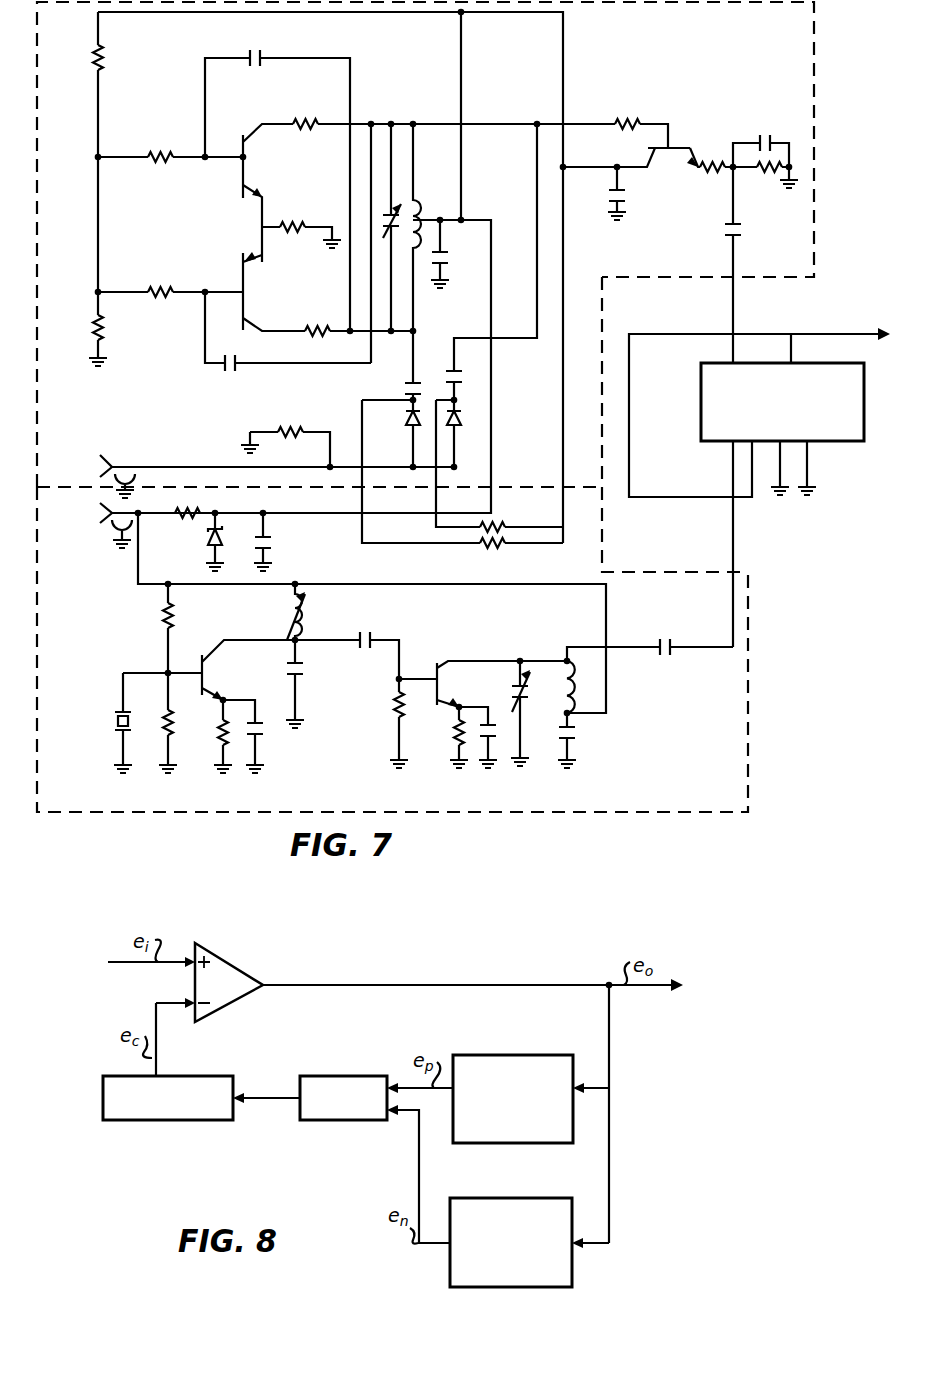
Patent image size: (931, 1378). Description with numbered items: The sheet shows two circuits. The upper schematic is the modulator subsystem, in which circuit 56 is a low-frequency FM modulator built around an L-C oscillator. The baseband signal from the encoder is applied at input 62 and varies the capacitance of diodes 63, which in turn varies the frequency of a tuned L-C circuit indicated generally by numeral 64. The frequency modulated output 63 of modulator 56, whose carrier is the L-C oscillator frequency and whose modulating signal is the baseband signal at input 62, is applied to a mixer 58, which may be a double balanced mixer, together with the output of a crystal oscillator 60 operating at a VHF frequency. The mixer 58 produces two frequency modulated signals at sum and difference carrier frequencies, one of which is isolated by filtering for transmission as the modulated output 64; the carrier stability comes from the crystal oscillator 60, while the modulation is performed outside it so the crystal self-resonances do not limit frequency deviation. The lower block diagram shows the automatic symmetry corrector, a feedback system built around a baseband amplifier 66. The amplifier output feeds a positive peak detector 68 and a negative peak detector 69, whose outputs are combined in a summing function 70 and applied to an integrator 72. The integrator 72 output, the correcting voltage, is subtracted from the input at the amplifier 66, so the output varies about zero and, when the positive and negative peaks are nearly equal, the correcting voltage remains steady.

In FIG. 7, the modulator circuit 56 is at (815, 137).
In FIG. 7, the mixer 58 is at (847, 441).
In FIG. 7, the crystal oscillator 60 is at (752, 748).
In FIG. 7, the input 62 is at (98, 462).
In FIG. 7, the diodes / modulator output 63 is at (733, 258).
In FIG. 7, the tuned L-C circuit 64 is at (437, 160).
In FIG. 8, the baseband amplifier 66 is at (240, 962).
In FIG. 8, the positive peak detector 68 is at (513, 1055).
In FIG. 8, the negative peak detector 69 is at (565, 1288).
In FIG. 8, the summing function 70 is at (328, 1120).
In FIG. 8, the integrator 72 is at (186, 1120).